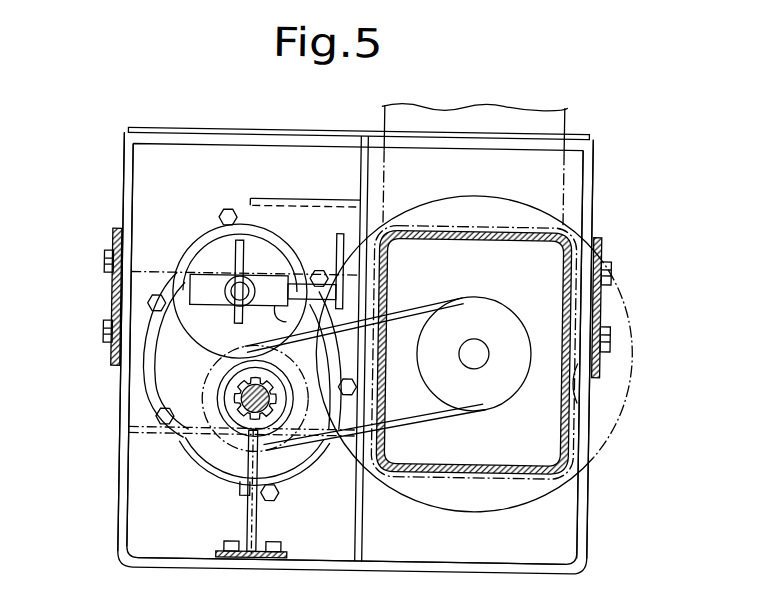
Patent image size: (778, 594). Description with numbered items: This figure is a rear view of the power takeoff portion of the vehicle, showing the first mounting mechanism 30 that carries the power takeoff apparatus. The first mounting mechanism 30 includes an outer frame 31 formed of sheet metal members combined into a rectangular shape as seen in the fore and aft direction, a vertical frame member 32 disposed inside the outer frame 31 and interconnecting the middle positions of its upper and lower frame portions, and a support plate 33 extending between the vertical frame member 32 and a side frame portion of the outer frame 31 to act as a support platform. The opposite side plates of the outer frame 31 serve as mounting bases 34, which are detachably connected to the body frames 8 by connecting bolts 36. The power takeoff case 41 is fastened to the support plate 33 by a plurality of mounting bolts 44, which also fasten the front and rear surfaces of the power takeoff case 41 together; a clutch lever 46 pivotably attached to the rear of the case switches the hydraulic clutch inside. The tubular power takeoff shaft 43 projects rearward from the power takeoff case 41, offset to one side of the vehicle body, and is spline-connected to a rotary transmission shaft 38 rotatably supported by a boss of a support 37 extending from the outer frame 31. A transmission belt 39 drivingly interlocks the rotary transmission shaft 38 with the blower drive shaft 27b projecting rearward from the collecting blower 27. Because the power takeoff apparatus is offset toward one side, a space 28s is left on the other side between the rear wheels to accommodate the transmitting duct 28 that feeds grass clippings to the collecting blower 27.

The body frames 8 is at (111, 300).
The collecting blower 27 is at (633, 376).
The blower drive shaft 27b is at (469, 335).
The transmitting duct 28 is at (481, 240).
The space 28s is at (550, 512).
The first mounting mechanism 30 is at (131, 113).
The outer frame 31 is at (590, 169).
The vertical frame member 32 is at (361, 524).
The support plate 33 is at (309, 212).
The mounting bases 34 is at (134, 258).
The connecting bolts 36 is at (104, 262).
The support 37 is at (250, 522).
The rotary transmission shaft 38 is at (240, 392).
The transmission belt 39 is at (438, 414).
The power takeoff case 41 is at (200, 231).
The power takeoff shaft 43 is at (288, 482).
The mounting bolts 44 is at (157, 308).
The clutch lever 46 is at (336, 245).